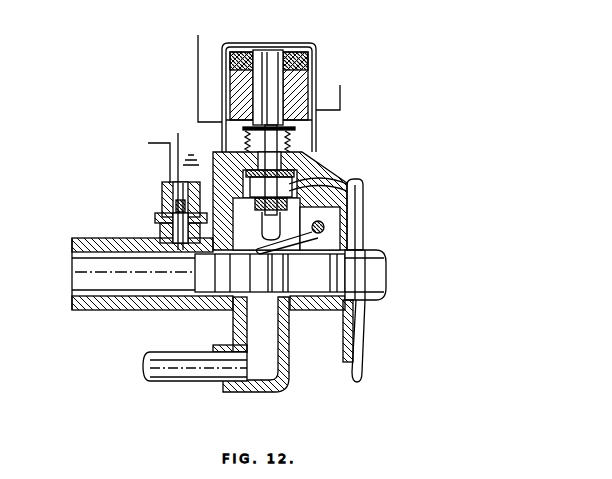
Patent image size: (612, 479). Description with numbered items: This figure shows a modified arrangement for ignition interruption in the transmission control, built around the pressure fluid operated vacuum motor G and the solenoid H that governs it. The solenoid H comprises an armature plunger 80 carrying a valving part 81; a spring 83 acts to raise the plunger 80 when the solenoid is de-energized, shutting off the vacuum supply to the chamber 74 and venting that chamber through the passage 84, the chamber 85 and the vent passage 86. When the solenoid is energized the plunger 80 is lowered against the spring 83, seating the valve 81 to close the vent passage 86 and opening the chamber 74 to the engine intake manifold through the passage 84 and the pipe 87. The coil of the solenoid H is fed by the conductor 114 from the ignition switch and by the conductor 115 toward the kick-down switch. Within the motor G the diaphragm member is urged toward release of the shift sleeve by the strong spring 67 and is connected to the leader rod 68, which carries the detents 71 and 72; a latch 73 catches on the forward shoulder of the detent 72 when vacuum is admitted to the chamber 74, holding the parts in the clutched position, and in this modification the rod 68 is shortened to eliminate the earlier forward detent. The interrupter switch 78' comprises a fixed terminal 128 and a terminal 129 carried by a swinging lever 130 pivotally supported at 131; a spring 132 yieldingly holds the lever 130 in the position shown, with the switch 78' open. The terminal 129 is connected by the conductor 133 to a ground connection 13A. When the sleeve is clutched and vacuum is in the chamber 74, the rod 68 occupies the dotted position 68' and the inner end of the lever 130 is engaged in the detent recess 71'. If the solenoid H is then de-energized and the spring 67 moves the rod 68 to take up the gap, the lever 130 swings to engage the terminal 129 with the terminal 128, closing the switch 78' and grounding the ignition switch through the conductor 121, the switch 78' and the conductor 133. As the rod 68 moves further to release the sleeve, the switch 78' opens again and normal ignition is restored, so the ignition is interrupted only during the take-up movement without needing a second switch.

The armature plunger 80 is at (268, 56).
The conductor 115 is at (198, 48).
The solenoid H is at (318, 70).
The conductor 114 is at (340, 88).
The spring 83 is at (296, 129).
The valve 81 is at (291, 145).
The chamber 85 is at (310, 172).
The passage 84 is at (328, 165).
The pressure fluid operated motor G is at (364, 190).
The leader rod 68 is at (382, 268).
The spring 67 is at (368, 322).
The chamber 74 is at (355, 372).
The pipe 87 is at (158, 385).
The dotted position of rod 68' is at (228, 289).
The detent recess 71' is at (136, 299).
The detent 71 is at (251, 344).
The detent 72 is at (351, 280).
The latch 73 is at (270, 273).
The vent passage 86 is at (213, 273).
The conductor 121 is at (152, 143).
The terminal 129 is at (176, 150).
The cap 13A is at (193, 156).
The interrupter switch 78' is at (150, 199).
The fixed terminal 128 is at (165, 192).
The spring 132 is at (165, 206).
The swinging lever 130 is at (165, 228).
The conductor 133 is at (250, 174).
The pivot 131 is at (252, 188).